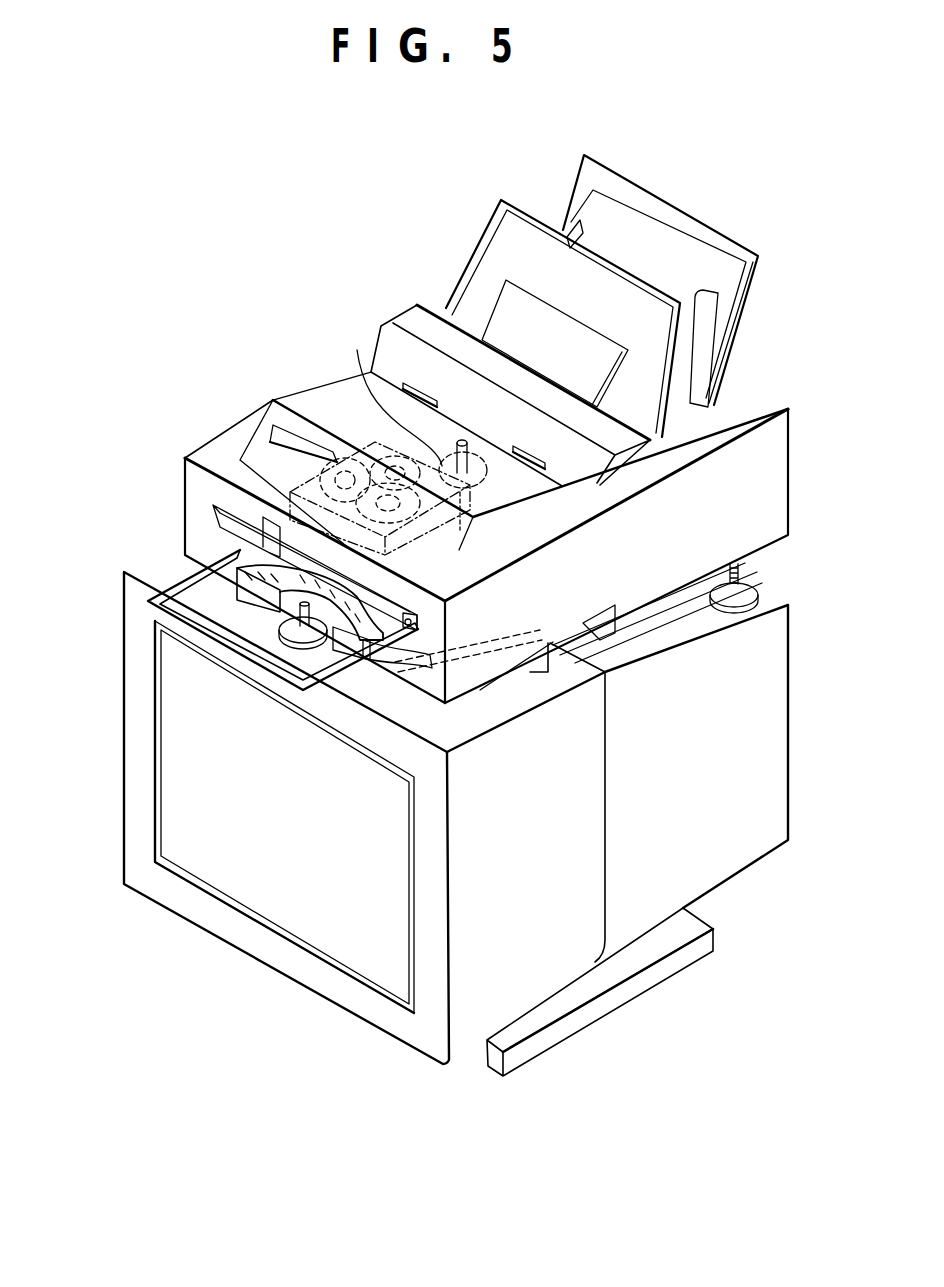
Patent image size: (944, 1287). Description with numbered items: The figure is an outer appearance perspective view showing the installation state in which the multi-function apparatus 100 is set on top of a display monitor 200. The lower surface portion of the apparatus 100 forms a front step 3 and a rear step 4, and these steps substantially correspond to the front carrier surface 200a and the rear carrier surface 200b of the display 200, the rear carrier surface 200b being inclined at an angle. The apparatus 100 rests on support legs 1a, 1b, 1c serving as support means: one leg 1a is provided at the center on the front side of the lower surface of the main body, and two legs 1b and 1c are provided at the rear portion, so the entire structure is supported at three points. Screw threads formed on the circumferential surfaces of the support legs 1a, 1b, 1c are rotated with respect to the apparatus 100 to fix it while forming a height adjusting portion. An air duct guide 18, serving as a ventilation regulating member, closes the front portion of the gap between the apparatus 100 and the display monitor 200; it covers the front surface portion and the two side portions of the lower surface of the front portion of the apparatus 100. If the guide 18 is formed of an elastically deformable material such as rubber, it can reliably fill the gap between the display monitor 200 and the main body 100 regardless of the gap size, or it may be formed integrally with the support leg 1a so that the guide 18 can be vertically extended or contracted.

The multi-function apparatus 100 is at (123, 408).
The support leg 1a is at (285, 631).
The support leg 1b is at (357, 352).
The support leg 1c is at (746, 590).
The air duct guide 18 is at (243, 604).
The display monitor 200 is at (95, 910).
The front carrier surface 200a is at (487, 717).
The rear carrier surface 200b is at (710, 623).
The front step 3 is at (535, 652).
The rear step 4 is at (677, 607).